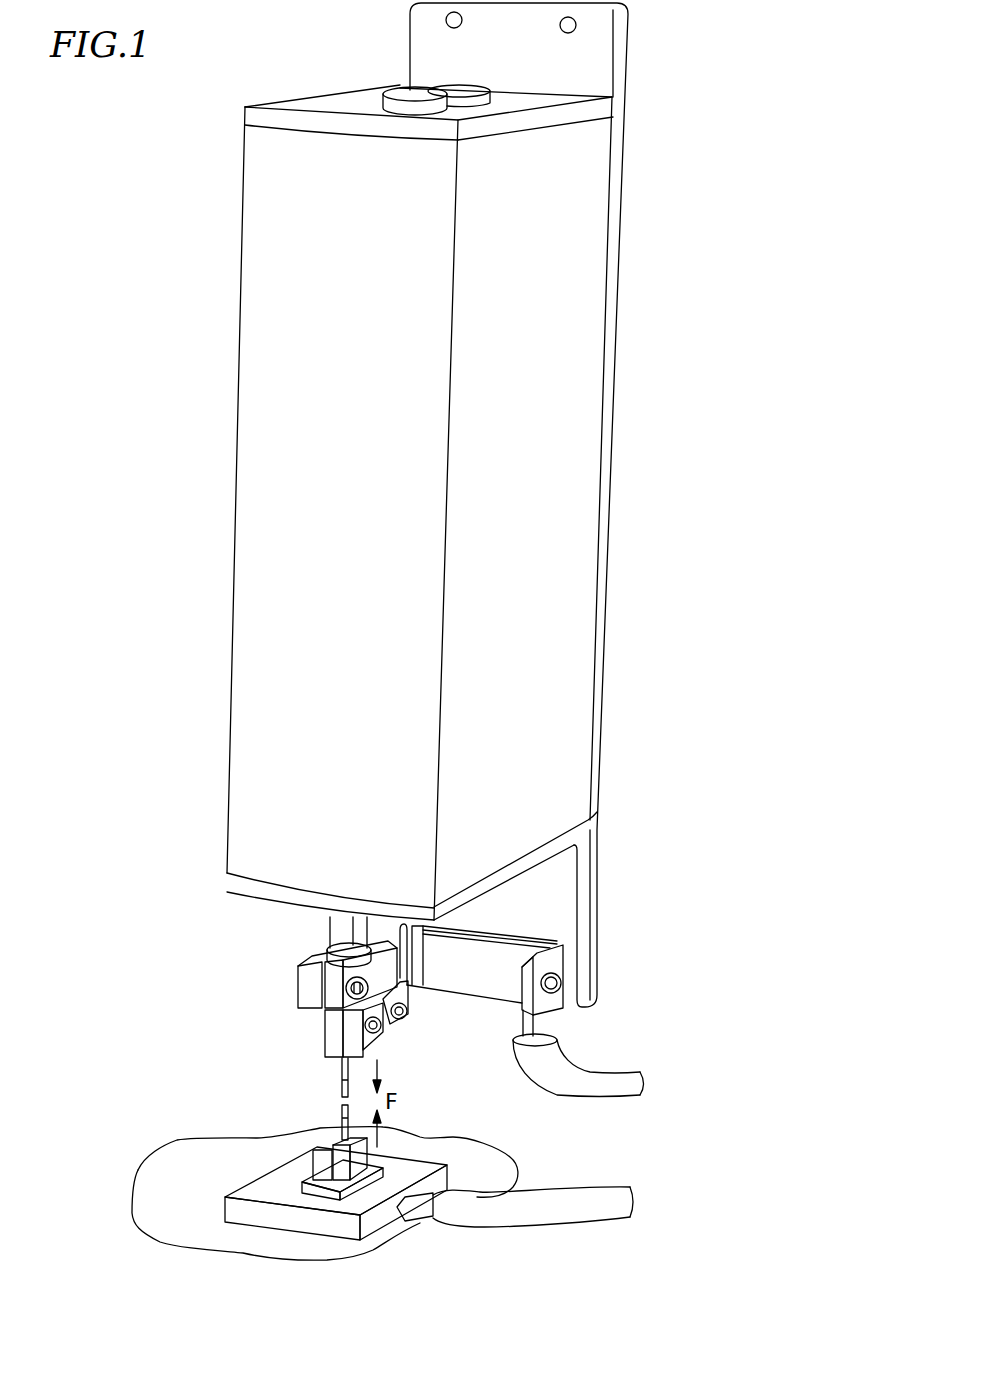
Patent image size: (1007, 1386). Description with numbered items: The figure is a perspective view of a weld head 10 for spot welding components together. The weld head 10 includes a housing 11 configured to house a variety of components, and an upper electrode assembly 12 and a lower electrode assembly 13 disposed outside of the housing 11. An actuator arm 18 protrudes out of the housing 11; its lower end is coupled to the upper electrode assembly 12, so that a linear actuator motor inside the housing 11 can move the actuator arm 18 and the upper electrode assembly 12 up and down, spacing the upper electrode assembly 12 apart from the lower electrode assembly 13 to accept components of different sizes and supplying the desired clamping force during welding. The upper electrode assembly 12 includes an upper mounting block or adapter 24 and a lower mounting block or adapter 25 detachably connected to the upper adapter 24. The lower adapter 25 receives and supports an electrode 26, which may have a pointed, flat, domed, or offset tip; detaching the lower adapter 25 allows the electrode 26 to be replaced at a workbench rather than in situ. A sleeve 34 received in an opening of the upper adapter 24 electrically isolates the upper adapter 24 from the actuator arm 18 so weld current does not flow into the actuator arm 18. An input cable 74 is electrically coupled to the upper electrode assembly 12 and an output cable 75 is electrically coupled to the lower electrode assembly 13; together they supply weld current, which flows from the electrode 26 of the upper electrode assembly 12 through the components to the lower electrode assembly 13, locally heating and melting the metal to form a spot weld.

The weld head 10 is at (727, 72).
The housing 11 is at (562, 428).
The upper electrode assembly 12 is at (268, 1013).
The lower electrode assembly 13 is at (240, 1148).
The actuator arm 18 is at (333, 925).
The upper mounting block or adapter 24 is at (298, 988).
The lower mounting block or adapter 25 is at (330, 1032).
The electrode 26 is at (333, 1067).
The sleeve 34 is at (333, 953).
The input cable 74 is at (586, 1075).
The output cable 75 is at (583, 1200).